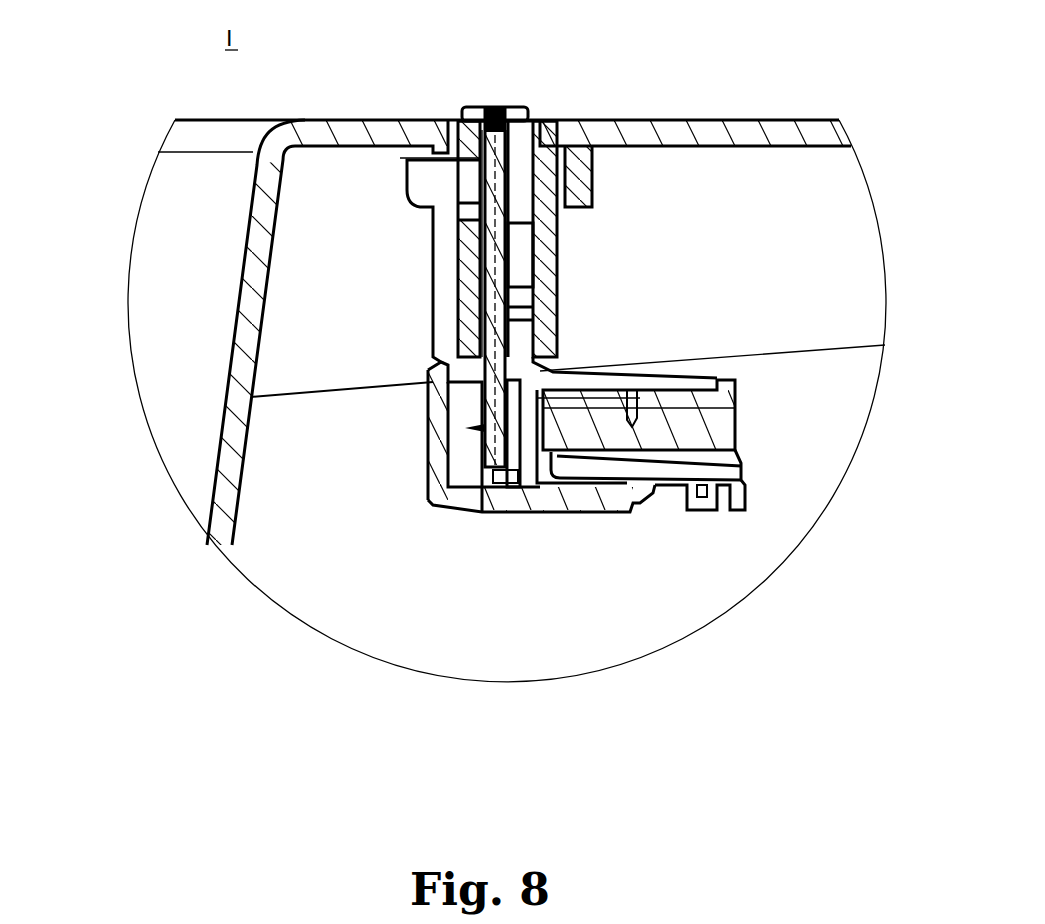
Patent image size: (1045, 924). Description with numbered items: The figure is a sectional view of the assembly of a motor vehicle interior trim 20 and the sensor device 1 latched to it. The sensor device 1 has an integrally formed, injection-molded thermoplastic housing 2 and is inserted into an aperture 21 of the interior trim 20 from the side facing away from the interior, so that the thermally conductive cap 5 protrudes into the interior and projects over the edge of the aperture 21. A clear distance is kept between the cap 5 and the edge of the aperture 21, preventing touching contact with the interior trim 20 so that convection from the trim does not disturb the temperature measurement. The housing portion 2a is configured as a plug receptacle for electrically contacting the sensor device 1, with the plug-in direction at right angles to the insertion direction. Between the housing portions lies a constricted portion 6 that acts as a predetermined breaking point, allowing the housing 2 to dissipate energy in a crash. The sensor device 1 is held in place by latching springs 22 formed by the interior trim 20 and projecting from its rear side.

The sensor device 1 is at (372, 216).
The housing 2 is at (430, 257).
The housing portion 2a is at (578, 500).
The thermally conductive cap 5 is at (490, 117).
The constricted portion 6 is at (433, 359).
The interior trim 20 is at (727, 123).
The aperture 21 is at (532, 117).
The latching spring 22 is at (713, 420).